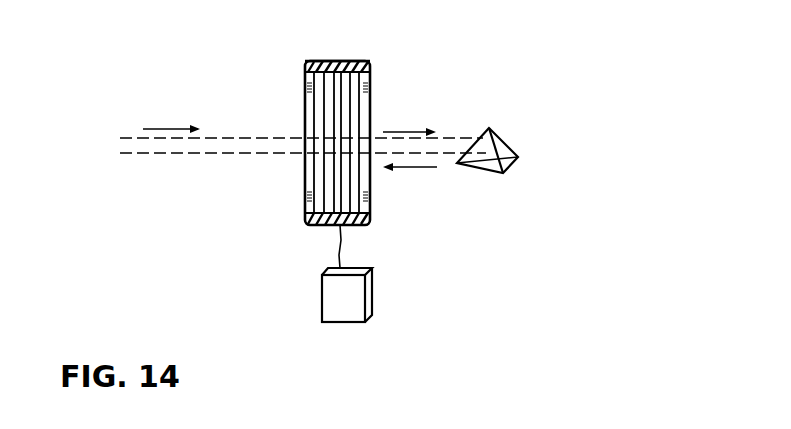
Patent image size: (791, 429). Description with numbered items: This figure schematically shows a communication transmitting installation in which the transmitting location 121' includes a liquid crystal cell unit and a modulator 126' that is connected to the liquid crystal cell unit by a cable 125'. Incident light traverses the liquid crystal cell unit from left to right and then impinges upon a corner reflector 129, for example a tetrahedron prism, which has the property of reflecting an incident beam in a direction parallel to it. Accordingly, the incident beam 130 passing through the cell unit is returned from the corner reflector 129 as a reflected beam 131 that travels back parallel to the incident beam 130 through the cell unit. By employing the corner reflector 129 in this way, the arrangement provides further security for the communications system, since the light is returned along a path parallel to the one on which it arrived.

The transmitting location 121' is at (302, 122).
The incident beam 130 is at (206, 138).
The reflected beam 131 is at (377, 153).
The corner reflector 129 is at (518, 156).
The cable 125' is at (310, 246).
The modulator 126' is at (311, 303).